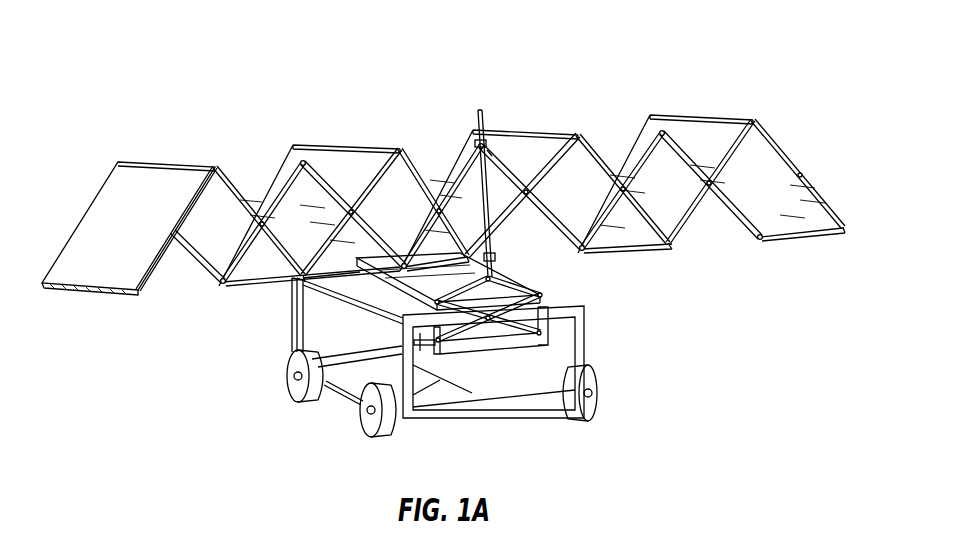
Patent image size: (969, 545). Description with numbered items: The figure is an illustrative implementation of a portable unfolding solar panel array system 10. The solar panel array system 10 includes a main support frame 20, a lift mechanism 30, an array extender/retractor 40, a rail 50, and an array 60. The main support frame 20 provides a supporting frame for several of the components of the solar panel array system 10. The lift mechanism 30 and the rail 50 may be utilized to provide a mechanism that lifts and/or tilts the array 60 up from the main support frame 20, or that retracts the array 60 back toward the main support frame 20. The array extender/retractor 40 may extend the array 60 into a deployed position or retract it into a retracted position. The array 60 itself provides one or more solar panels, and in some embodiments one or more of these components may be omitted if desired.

The solar panel array system 10 is at (772, 67).
The main support frame 20 is at (587, 338).
The lift mechanism 30 is at (518, 276).
The array extender/retractor 40 is at (489, 150).
The rail 50 is at (400, 292).
The array 60 is at (117, 160).